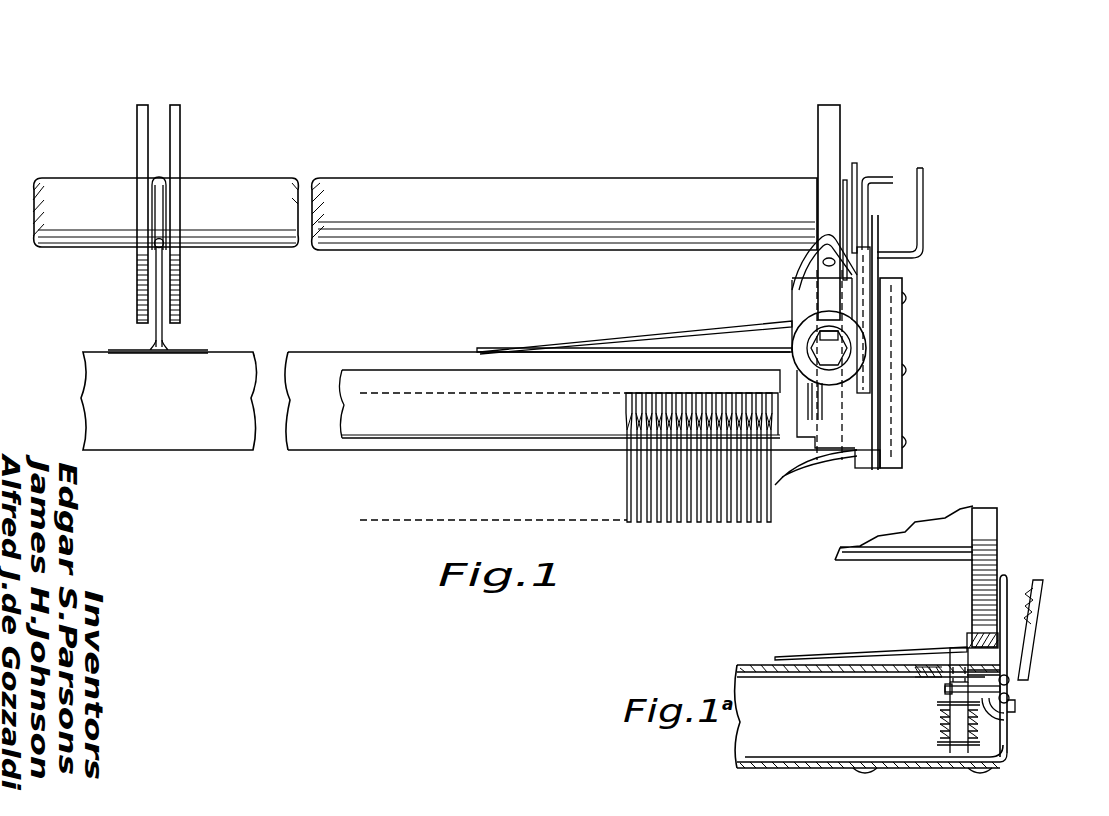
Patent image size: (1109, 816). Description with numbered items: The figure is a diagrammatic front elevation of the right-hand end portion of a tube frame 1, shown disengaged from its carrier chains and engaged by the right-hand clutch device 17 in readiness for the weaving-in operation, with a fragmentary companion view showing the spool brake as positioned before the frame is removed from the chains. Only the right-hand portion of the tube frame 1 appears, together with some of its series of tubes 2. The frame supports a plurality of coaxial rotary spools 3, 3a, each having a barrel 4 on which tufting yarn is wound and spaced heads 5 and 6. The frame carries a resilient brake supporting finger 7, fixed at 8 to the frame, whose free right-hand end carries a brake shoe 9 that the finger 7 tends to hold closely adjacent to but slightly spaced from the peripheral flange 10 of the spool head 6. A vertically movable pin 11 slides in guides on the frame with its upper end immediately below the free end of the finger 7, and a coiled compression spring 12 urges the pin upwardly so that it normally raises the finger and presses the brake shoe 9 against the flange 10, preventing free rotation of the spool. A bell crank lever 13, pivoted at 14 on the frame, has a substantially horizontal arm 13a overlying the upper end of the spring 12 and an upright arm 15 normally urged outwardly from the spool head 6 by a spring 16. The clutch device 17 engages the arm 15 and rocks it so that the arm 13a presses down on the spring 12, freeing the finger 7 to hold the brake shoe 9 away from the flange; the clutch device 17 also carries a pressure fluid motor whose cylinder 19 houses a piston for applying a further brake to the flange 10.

In FIG. 1, the tube frame 1 is at (330, 357).
In FIG. 1, the tubes 2 is at (772, 528).
In FIG. 1, the rotary spool 3 is at (720, 131).
In FIG. 1, the rotary spool 3a is at (95, 131).
In FIG. 1, the barrel 4 is at (62, 186).
In FIG. 1A, the barrel 4 is at (905, 561).
In FIG. 1, the spool head 5 is at (177, 129).
In FIG. 1, the spool head 6 is at (814, 142).
In FIG. 1, the brake supporting finger 7 is at (734, 346).
In FIG. 1A, the brake supporting finger 7 is at (894, 653).
In FIG. 1, the fixing point 8 is at (525, 349).
In FIG. 1A, the brake shoe 9 is at (975, 639).
In FIG. 1, the peripheral flange 10 is at (834, 104).
In FIG. 1A, the peripheral flange 10 is at (998, 521).
In FIG. 1A, the pin 11 is at (945, 684).
In FIG. 1A, the coiled compression spring 12 is at (940, 720).
In FIG. 1A, the bell crank lever 13 is at (1011, 686).
In FIG. 1A, the horizontal arm 13a is at (1000, 723).
In FIG. 1A, the pivot 14 is at (1011, 700).
In FIG. 1, the upright arm 15 is at (870, 204).
In FIG. 1A, the upright arm 15 is at (1034, 642).
In FIG. 1A, the spring 16 is at (1031, 586).
In FIG. 1, the clutch device 17 is at (904, 346).
In FIG. 1, the cylinder 19 is at (796, 298).